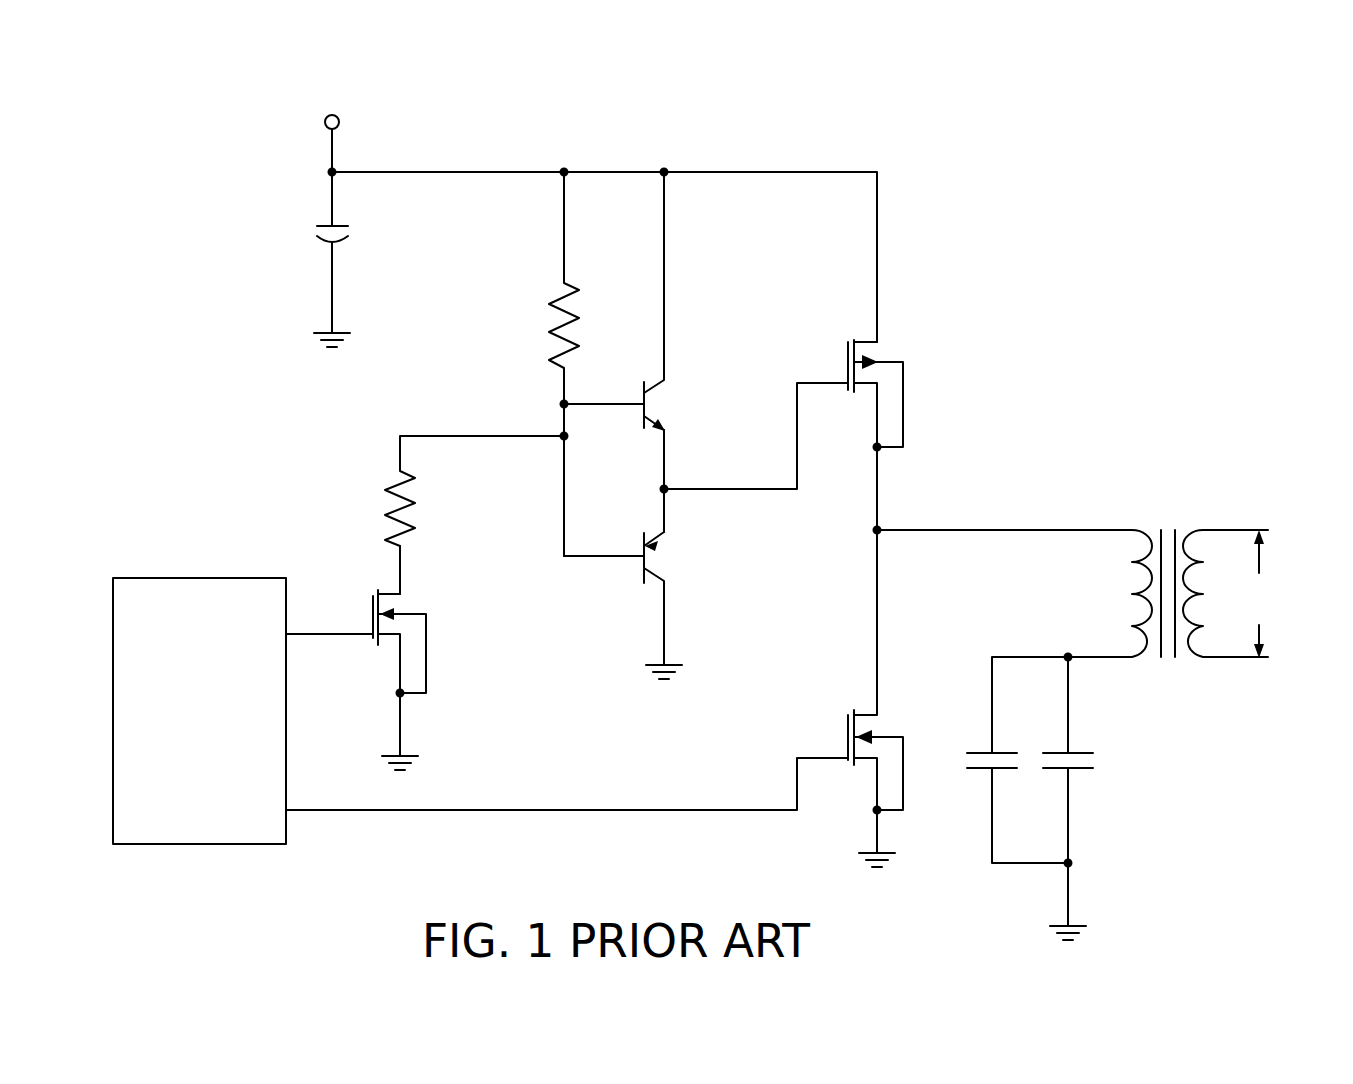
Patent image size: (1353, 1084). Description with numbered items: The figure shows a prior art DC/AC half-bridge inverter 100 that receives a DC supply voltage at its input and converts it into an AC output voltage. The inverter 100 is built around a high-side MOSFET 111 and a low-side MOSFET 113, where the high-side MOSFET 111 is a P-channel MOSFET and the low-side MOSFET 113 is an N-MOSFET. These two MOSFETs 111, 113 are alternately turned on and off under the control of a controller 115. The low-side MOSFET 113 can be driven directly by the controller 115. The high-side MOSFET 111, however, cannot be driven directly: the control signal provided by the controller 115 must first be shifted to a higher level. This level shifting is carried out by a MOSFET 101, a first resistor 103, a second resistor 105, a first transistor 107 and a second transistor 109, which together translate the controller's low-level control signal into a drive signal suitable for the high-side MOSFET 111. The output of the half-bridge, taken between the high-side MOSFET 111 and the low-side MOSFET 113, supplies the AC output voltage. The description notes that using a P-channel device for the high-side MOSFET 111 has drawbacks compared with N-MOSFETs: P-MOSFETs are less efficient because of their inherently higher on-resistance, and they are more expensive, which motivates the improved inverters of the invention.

The DC/AC half-bridge inverter 100 is at (1048, 103).
The MOSFET 101 is at (373, 600).
The first resistor 103 is at (390, 487).
The second resistor 105 is at (553, 303).
The first transistor 107 is at (644, 390).
The second transistor 109 is at (644, 546).
The high-side MOSFET 111 is at (849, 362).
The low-side MOSFET 113 is at (848, 724).
The controller 115 is at (157, 578).